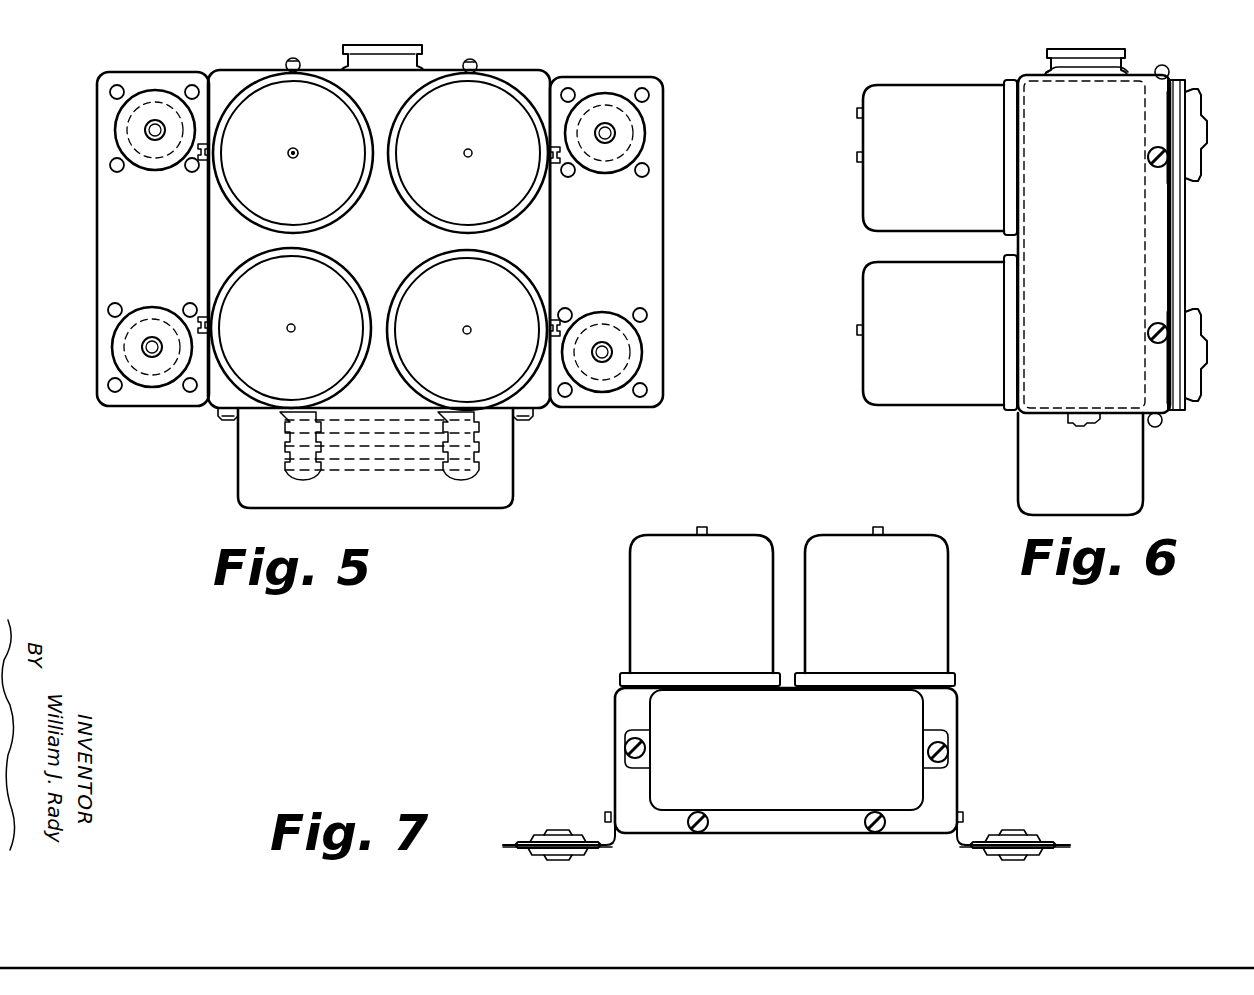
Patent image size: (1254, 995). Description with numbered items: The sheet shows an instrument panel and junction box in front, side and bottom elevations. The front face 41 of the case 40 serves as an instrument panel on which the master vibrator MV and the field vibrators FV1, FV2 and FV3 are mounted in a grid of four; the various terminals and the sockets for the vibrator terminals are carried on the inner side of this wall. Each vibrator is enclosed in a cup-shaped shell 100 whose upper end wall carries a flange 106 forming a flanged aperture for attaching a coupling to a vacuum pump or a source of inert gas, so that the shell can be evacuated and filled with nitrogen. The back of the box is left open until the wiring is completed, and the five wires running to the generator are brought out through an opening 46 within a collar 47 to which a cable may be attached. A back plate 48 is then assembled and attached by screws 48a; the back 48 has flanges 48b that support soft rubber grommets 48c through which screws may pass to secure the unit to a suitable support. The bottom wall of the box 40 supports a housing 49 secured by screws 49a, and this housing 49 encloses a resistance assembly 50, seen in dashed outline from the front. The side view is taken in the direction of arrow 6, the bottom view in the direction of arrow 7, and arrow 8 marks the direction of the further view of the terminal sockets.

In FIG. 5, the case 40 is at (555, 56).
In FIG. 6, the case 40 is at (1015, 62).
In FIG. 5, the front face 41 is at (235, 79).
In FIG. 6, the front face 41 is at (1000, 246).
In FIG. 6, the opening 46 is at (1097, 50).
In FIG. 5, the collar 47 is at (415, 51).
In FIG. 6, the collar 47 is at (1060, 54).
In FIG. 6, the back plate 48 is at (1144, 213).
In FIG. 5, the screws 48a is at (196, 170).
In FIG. 6, the screws 48a is at (1146, 157).
In FIG. 7, the screws 48a is at (865, 830).
In FIG. 5, the flanges 48b is at (100, 236).
In FIG. 6, the flanges 48b is at (1184, 266).
In FIG. 7, the flanges 48b is at (618, 845).
In FIG. 5, the soft rubber grommets 48c is at (124, 128).
In FIG. 6, the soft rubber grommets 48c is at (1170, 115).
In FIG. 7, the soft rubber grommets 48c is at (543, 836).
In FIG. 5, the housing 49 is at (510, 468).
In FIG. 6, the housing 49 is at (1025, 470).
In FIG. 7, the housing 49 is at (920, 790).
In FIG. 5, the screws 49a is at (228, 420).
In FIG. 6, the screws 49a is at (1082, 422).
In FIG. 7, the screws 49a is at (625, 752).
In FIG. 5, the resistance assembly 50 is at (389, 464).
In FIG. 6, the cup-shaped shell 100 is at (859, 114).
In FIG. 5, the flange 106 is at (293, 147).
In FIG. 6, the flange 106 is at (857, 156).
In FIG. 7, the flange 106 is at (702, 525).
In FIG. 5, the field vibrator FV1 is at (347, 285).
In FIG. 7, the field vibrator FV1 is at (630, 627).
In FIG. 5, the field vibrator FV2 is at (256, 209).
In FIG. 5, the field vibrator FV3 is at (490, 212).
In FIG. 6, the field vibrator FV3 is at (885, 226).
In FIG. 5, the master vibrator MV is at (420, 372).
In FIG. 6, the master vibrator MV is at (874, 386).
In FIG. 7, the master vibrator MV is at (927, 625).
In FIG. 5, the arrow 6 is at (714, 262).
In FIG. 5, the arrow 7 is at (422, 528).
In FIG. 6, the arrow 8 is at (1230, 213).